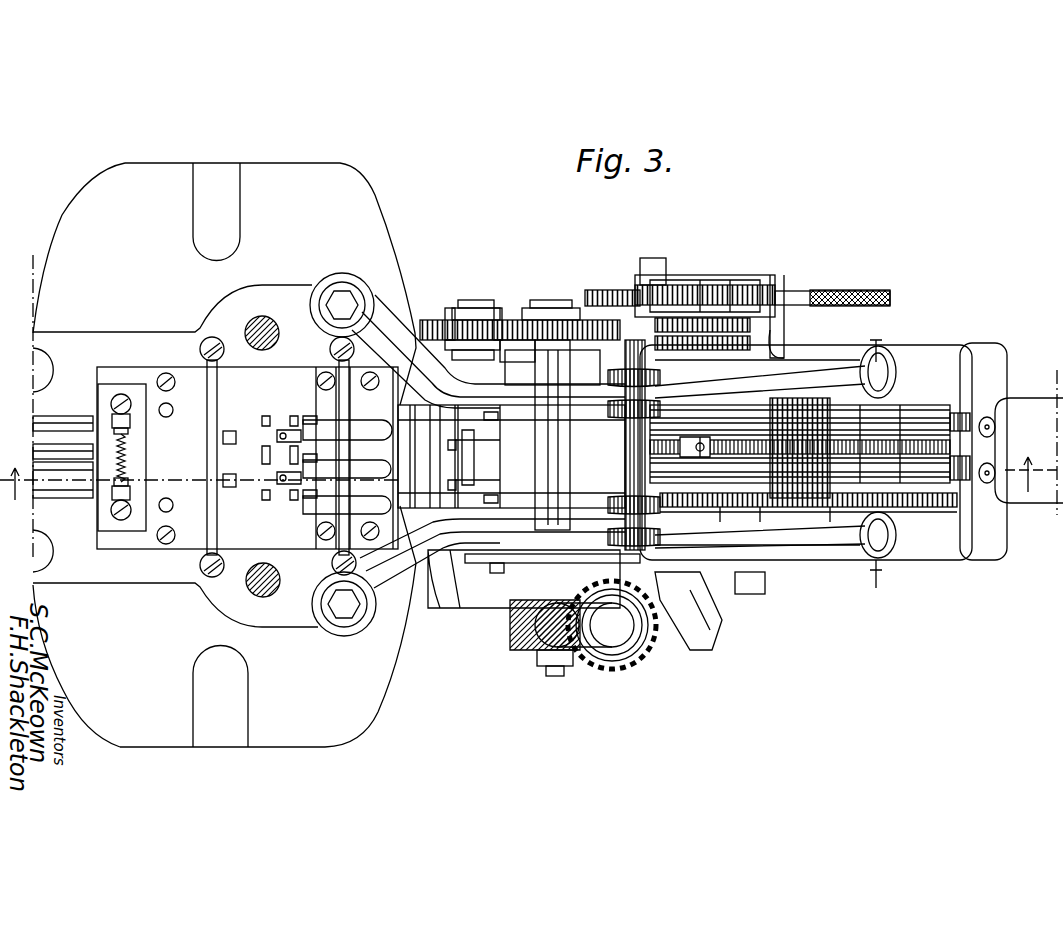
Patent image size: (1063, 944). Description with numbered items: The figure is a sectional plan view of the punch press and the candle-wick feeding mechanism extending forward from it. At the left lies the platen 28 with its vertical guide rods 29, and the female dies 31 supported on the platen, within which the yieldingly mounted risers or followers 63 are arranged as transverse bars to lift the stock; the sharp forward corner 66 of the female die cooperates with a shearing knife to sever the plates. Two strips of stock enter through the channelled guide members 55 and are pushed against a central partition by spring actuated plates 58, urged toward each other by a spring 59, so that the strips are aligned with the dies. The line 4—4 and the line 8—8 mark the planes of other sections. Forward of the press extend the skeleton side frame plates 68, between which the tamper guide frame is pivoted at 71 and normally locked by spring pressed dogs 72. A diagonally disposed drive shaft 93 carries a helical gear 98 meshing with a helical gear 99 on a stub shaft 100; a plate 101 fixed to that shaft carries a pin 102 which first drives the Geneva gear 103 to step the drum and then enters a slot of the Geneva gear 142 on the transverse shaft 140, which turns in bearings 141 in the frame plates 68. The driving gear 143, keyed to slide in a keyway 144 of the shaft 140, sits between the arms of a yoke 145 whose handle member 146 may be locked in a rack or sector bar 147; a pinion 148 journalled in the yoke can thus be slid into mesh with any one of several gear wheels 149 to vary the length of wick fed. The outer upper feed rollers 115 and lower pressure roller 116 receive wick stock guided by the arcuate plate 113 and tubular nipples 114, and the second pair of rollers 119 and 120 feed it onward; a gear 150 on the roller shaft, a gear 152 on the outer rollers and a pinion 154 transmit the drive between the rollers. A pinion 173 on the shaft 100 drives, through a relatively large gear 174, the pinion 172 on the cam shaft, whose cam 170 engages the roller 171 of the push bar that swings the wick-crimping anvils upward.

The platen 28 is at (172, 340).
The vertical guide rods 29 is at (280, 582).
The female dies 31 is at (247, 458).
The risers or followers 63 is at (218, 400).
The sharp forward corner 66 is at (392, 496).
The channelled guide members 55 is at (74, 430).
The spring actuated plates 58 is at (132, 495).
The spring 59 is at (130, 458).
The section line 4 is at (528, 442).
The pinion 172 is at (426, 320).
The cam 170 is at (462, 340).
The relatively large gear 174 is at (510, 302).
The roller 171 is at (500, 350).
The pinion 173 is at (545, 320).
The driving gear 143 is at (598, 292).
The yoke 145 is at (680, 290).
The pinion 148 is at (748, 292).
The handle member 146 is at (836, 290).
The gear wheels 149 is at (778, 325).
The rack or sector bar 147 is at (770, 340).
The pin 8 is at (879, 456).
The keyway 144 is at (640, 354).
The skeleton side frame plates 68 is at (838, 372).
The Geneva gear 142 is at (675, 566).
The bearings 141 is at (622, 415).
The Geneva gear 103 is at (500, 610).
The pivot 71 is at (500, 420).
The spring pressed dogs 72 is at (472, 425).
The upper feed roller 119 is at (628, 440).
The transverse shaft 140 is at (628, 458).
The gear 152 is at (900, 556).
The upper feed rollers 115 is at (900, 430).
The lower pressure rollers 120 is at (795, 446).
The lower pressure roller 116 is at (975, 405).
The tubular nipples 114 is at (996, 428).
The arcuate plate 113 is at (1034, 504).
The helical gear 99 is at (512, 650).
The drive shaft 93 is at (604, 660).
The stub shaft 100 is at (552, 668).
The helical gear 98 is at (642, 664).
The gear 150 is at (720, 590).
The pinion 154 is at (810, 540).
The plate 101 is at (495, 560).
The pin 102 is at (492, 570).